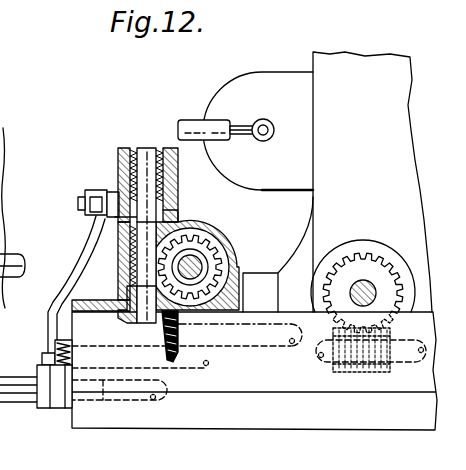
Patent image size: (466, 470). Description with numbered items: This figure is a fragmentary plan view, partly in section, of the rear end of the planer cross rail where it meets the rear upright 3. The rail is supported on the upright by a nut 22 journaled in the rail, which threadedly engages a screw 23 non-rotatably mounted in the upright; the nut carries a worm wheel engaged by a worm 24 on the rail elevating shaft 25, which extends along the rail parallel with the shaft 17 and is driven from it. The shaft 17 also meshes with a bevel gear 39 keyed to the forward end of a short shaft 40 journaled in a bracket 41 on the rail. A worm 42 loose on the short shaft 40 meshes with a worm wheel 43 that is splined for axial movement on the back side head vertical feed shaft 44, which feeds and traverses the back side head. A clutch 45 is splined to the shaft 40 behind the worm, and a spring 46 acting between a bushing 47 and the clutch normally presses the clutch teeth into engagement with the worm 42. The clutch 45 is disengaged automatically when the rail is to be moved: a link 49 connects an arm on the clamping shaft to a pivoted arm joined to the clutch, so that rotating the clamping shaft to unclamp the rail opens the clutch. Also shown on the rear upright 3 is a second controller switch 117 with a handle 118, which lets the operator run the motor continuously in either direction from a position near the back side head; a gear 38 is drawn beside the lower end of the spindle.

The upright 3 is at (405, 56).
The shaft 17 is at (263, 324).
The nut 22 is at (350, 268).
The screw 23 is at (365, 280).
The worm 24 is at (377, 373).
The rail elevating shaft 25 is at (318, 360).
The pinion 38 is at (166, 360).
The bevel gear 39 is at (128, 320).
The short shaft 40 is at (147, 147).
The bracket 41 is at (178, 202).
The worm 42 is at (128, 270).
The worm wheel 43 is at (212, 243).
The vertical feed shaft 44 is at (236, 252).
The clutch 45 is at (180, 212).
The spring 46 is at (128, 165).
The bushing 47 is at (128, 147).
The link 49 is at (76, 236).
The controller switch 117 is at (261, 78).
The handle 118 is at (192, 118).